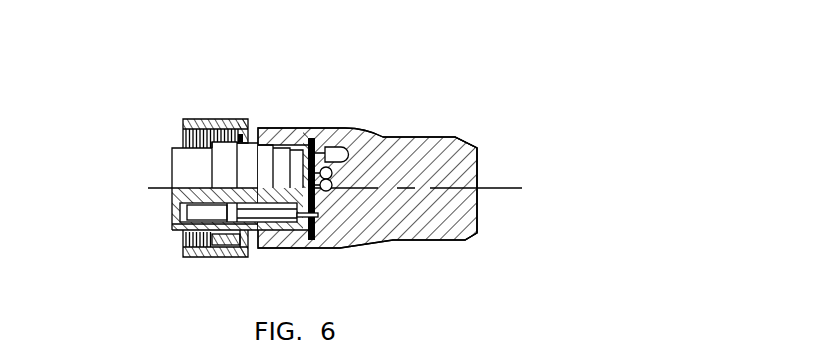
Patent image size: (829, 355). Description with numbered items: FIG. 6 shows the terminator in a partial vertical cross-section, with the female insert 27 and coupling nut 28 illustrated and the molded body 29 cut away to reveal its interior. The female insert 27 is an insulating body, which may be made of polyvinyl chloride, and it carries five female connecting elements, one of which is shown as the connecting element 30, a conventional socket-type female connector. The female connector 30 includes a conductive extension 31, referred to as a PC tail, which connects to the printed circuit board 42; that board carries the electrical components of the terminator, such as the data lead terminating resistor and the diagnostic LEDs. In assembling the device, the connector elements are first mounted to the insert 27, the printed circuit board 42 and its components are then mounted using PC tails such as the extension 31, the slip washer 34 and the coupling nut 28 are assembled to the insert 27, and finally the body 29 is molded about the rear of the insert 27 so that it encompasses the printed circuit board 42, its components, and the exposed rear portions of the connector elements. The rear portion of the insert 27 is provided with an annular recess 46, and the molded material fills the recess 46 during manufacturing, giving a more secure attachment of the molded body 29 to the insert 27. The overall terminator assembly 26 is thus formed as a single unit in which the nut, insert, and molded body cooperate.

The housing body 26 is at (404, 113).
The female insert 27 is at (187, 168).
The coupling nut 28 is at (232, 120).
The molded body 29 is at (455, 142).
The female connecting element 30 is at (183, 238).
The conductive extension (PC tail) 31 is at (317, 215).
The slip washer 34 is at (229, 252).
The printed circuit board 42 is at (318, 138).
The annular recess 46 is at (280, 157).